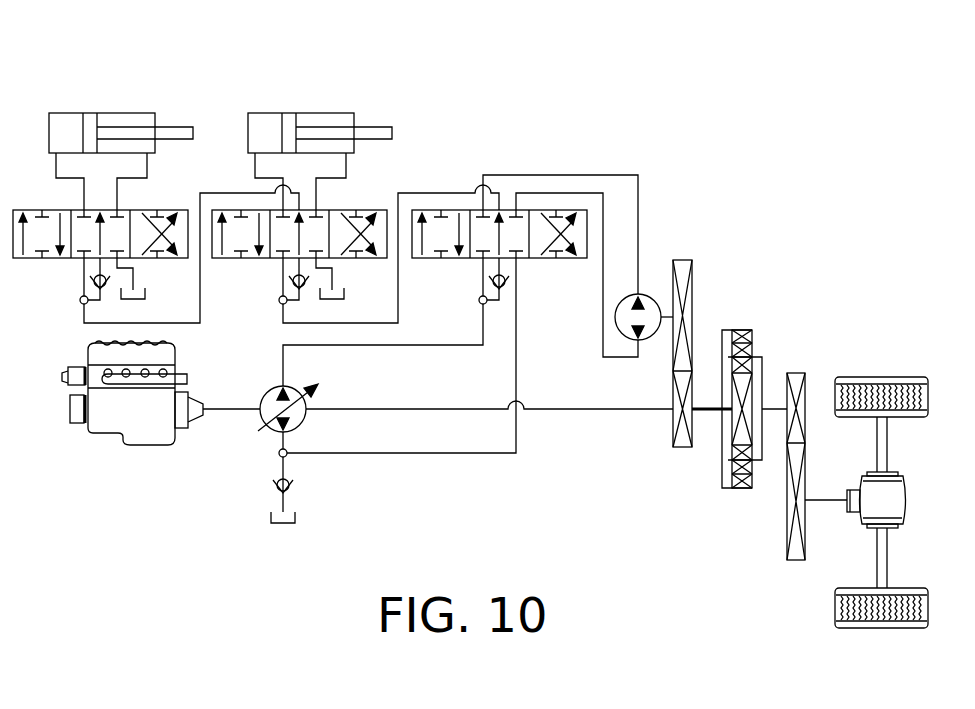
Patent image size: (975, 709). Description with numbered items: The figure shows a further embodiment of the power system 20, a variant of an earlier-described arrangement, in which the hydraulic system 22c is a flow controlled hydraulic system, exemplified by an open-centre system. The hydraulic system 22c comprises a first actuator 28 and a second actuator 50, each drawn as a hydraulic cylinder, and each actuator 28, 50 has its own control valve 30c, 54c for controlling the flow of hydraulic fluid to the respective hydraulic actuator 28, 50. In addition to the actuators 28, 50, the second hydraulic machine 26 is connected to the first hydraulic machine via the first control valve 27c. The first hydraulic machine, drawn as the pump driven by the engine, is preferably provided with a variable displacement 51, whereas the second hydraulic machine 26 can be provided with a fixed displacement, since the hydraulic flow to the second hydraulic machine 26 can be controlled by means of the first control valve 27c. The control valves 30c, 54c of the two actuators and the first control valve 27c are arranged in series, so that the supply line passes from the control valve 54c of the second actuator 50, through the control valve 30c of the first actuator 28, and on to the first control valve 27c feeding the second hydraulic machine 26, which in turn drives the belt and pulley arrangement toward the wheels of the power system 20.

The power system 20 is at (714, 92).
The hydraulic system 22c is at (535, 92).
The second hydraulic machine 26 is at (655, 297).
The first control valve 27c is at (441, 210).
The first actuator 28 is at (333, 113).
The control valve 30c is at (357, 210).
The second actuator 50 is at (134, 113).
The variable displacement 51 is at (262, 432).
The control valve 54c is at (157, 210).